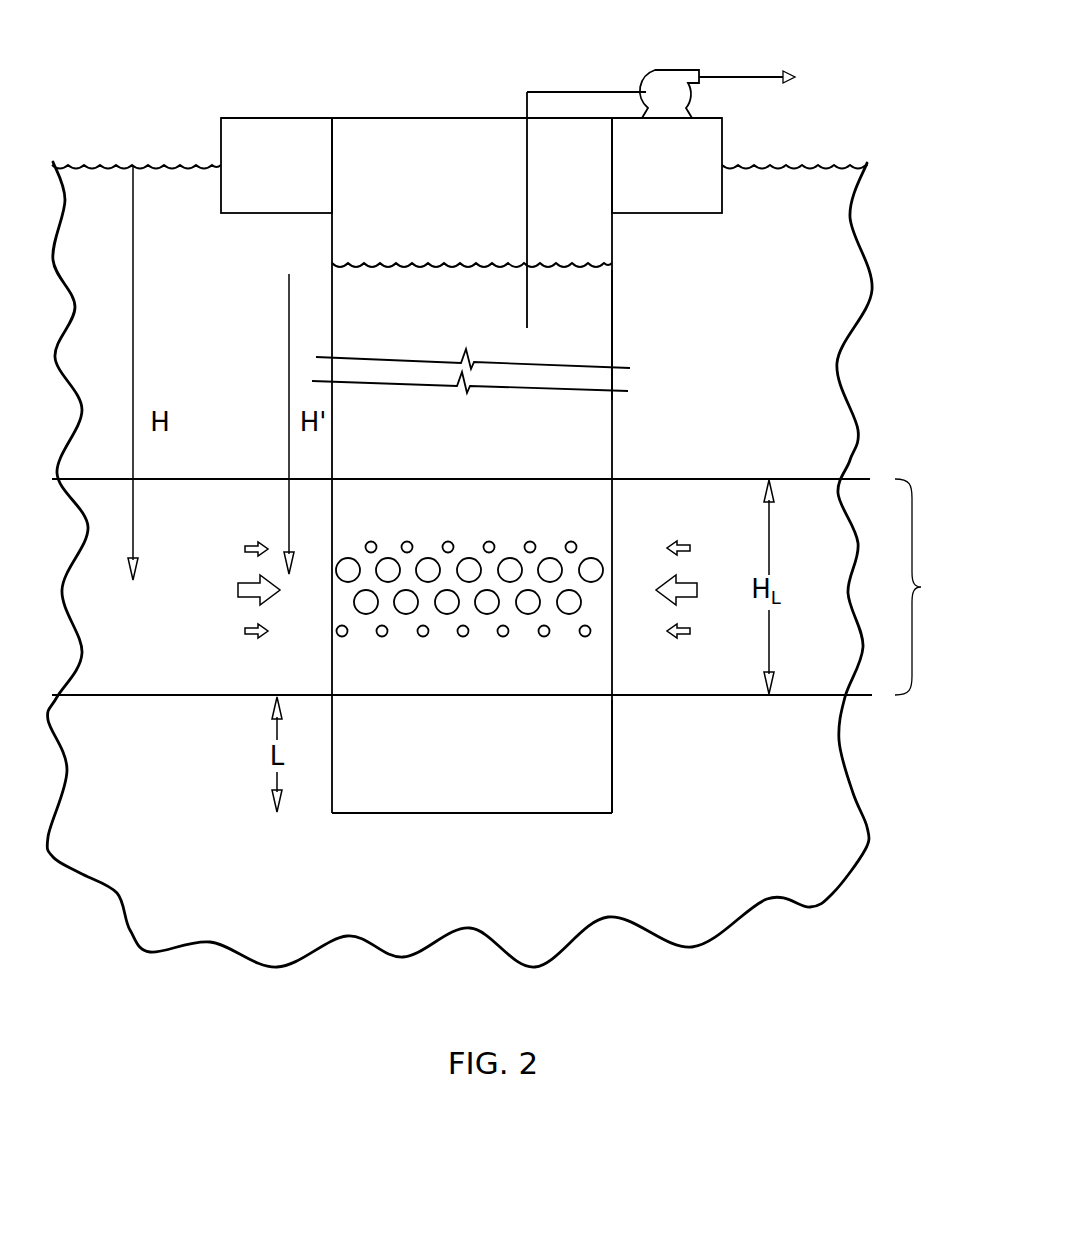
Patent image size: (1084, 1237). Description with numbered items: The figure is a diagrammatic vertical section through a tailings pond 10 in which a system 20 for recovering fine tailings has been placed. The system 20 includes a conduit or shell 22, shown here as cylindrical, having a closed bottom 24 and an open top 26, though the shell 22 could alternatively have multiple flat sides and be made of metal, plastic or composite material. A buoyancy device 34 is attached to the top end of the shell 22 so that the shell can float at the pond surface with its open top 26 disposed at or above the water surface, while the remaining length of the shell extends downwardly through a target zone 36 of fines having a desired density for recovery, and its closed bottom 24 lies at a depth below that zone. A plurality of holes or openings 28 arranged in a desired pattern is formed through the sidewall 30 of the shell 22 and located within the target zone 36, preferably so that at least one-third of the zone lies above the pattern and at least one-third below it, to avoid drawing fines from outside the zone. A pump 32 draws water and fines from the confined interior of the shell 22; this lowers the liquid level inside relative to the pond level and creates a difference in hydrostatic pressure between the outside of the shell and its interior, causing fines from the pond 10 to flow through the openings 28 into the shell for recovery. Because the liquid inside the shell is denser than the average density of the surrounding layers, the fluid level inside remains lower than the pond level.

The pond 10 is at (866, 256).
The system 20 is at (242, 117).
The conduit or shell 22 is at (615, 326).
The closed bottom 24 is at (380, 815).
The open top 26 is at (370, 117).
The holes or openings 28 is at (406, 615).
The sidewall 30 is at (600, 771).
The pump 32 is at (666, 78).
The buoyancy device 34 is at (244, 212).
The target zone 36 is at (929, 587).